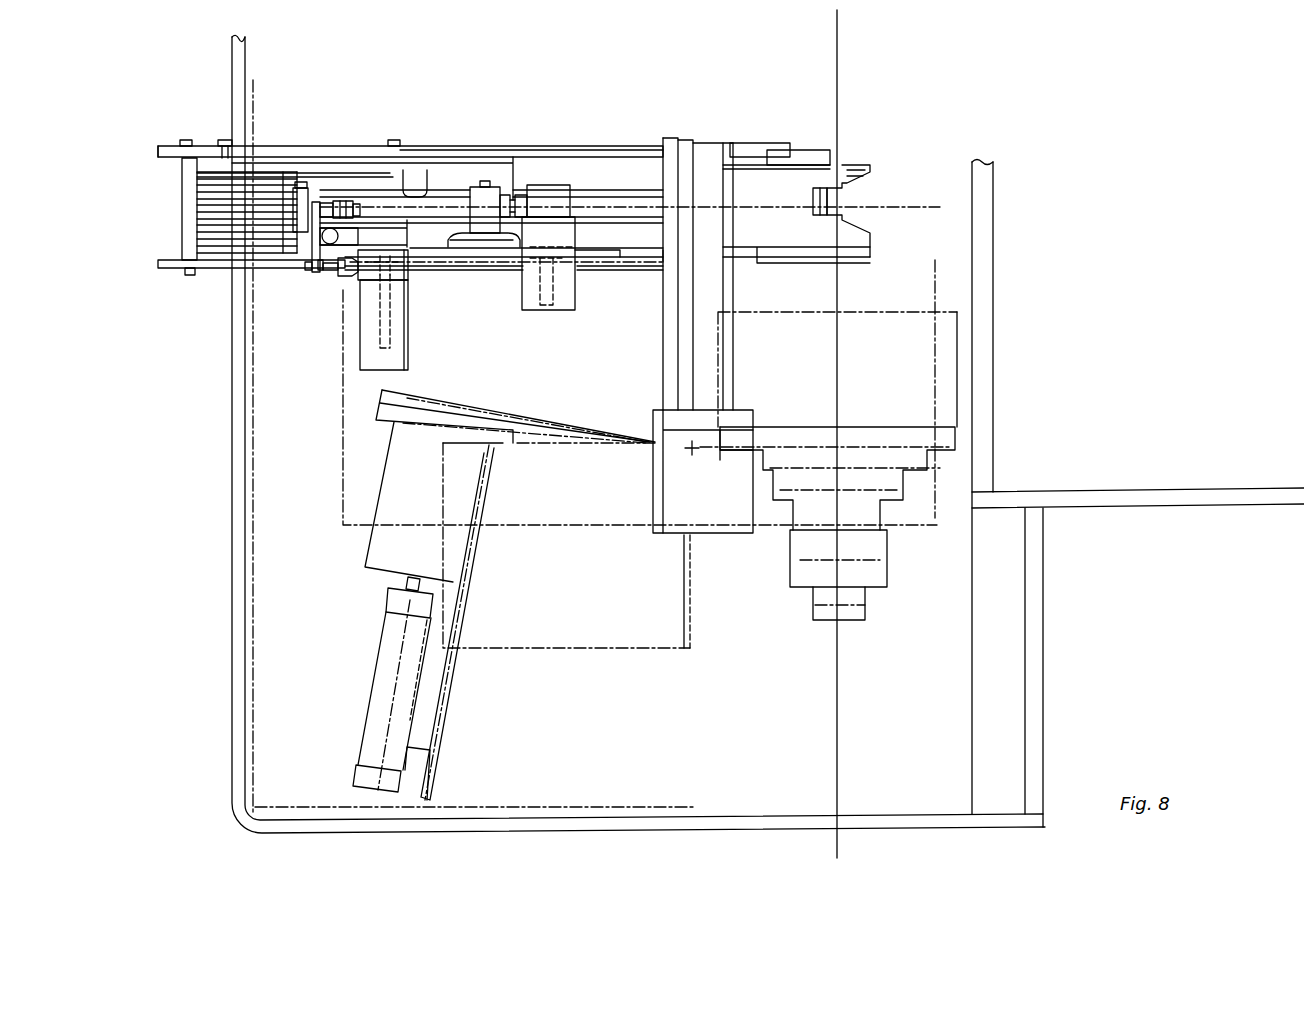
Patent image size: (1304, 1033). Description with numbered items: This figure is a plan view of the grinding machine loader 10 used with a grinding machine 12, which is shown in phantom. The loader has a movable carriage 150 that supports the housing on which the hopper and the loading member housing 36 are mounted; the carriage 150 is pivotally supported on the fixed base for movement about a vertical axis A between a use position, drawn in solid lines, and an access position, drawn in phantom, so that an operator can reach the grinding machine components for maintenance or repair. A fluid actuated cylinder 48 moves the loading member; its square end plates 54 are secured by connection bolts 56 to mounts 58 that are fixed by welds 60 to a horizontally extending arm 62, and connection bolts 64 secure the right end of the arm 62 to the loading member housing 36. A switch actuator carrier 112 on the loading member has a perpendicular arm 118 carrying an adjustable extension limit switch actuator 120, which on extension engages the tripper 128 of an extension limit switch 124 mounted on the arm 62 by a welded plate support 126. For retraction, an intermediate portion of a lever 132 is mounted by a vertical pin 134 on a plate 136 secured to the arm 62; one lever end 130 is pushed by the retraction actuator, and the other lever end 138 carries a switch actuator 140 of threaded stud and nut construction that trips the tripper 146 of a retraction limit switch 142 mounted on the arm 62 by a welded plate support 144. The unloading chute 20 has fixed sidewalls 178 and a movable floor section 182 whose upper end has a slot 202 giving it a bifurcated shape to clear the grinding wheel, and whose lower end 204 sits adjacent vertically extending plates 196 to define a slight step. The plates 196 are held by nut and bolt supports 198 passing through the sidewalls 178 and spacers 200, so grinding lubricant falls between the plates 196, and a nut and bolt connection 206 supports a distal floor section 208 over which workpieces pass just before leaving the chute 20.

The grinding machine loader 10 is at (611, 70).
The grinding machine 12 is at (975, 400).
The unloading chute 20 is at (580, 141).
The loading member housing 36 is at (640, 165).
The fluid actuated cylinder 48 is at (480, 200).
The square end plates 54 is at (300, 182).
The connection bolts 56 is at (305, 200).
The mounts 58 is at (240, 250).
The welds 60 is at (240, 215).
The horizontally extending arm 62 is at (425, 262).
The connection bolts 64 is at (548, 266).
The switch actuator carrier 112 is at (485, 181).
The arm 118 is at (342, 201).
The extension limit switch actuator 120 is at (360, 207).
The extension limit switch 124 is at (560, 200).
The welded plate support 126 is at (565, 242).
The tripper 128 is at (513, 200).
The lever end 130 is at (330, 190).
The lever 132 is at (320, 258).
The vertical pin 134 is at (312, 262).
The plate 136 is at (325, 228).
The lever end 138 is at (324, 270).
The switch actuator 140 is at (345, 277).
The retraction limit switch 142 is at (388, 280).
The welded plate support 144 is at (410, 350).
The tripper 146 is at (352, 280).
The movable carriage 150 is at (505, 407).
The fixed sidewalls 178 is at (605, 150).
The movable floor section 182 is at (757, 170).
The vertically extending plates 196 is at (222, 180).
The nut and bolt supports 198 is at (232, 146).
The spacers 200 is at (235, 160).
The slot 202 is at (838, 200).
The lower end 204 is at (515, 203).
The nut and bolt connection 206 is at (178, 152).
The distal floor section 208 is at (184, 188).
The axis A is at (696, 452).